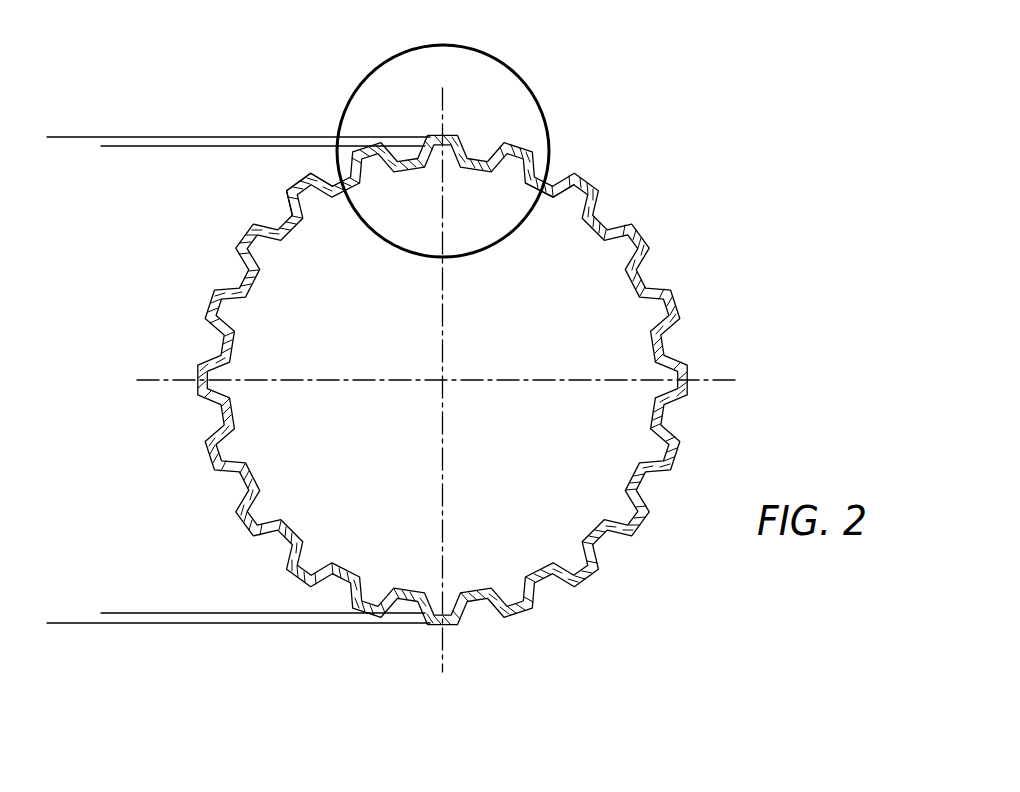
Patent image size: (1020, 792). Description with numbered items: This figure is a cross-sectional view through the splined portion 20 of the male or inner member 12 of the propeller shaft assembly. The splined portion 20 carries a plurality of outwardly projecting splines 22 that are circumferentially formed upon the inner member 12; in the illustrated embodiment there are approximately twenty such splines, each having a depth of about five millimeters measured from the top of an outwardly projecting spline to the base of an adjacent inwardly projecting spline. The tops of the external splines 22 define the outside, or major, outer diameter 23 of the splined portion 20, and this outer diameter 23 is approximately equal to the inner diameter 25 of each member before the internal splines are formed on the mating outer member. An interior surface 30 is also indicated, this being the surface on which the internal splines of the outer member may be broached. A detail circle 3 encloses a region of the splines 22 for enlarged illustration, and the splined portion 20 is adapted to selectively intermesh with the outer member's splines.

The male or inner member 12 is at (797, 97).
The splined portion 20 is at (632, 192).
The outwardly projecting splines 22 is at (292, 186).
The interior surface 30 is at (557, 202).
The detail circle of FIG. 3 is at (540, 110).
The outer diameter 23 is at (64, 137).
The inner diameter 25 is at (116, 146).